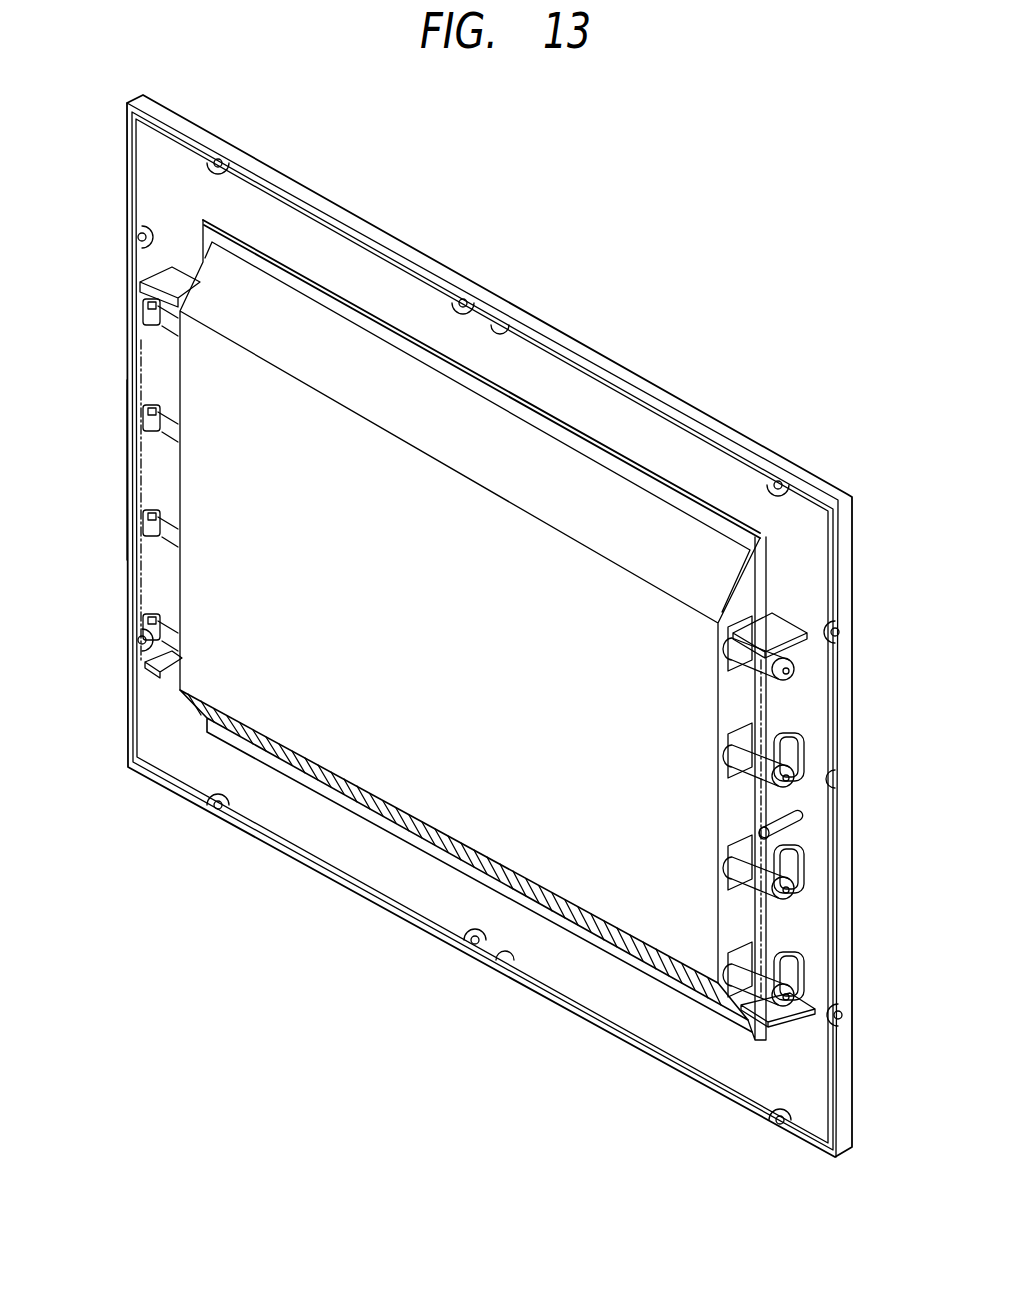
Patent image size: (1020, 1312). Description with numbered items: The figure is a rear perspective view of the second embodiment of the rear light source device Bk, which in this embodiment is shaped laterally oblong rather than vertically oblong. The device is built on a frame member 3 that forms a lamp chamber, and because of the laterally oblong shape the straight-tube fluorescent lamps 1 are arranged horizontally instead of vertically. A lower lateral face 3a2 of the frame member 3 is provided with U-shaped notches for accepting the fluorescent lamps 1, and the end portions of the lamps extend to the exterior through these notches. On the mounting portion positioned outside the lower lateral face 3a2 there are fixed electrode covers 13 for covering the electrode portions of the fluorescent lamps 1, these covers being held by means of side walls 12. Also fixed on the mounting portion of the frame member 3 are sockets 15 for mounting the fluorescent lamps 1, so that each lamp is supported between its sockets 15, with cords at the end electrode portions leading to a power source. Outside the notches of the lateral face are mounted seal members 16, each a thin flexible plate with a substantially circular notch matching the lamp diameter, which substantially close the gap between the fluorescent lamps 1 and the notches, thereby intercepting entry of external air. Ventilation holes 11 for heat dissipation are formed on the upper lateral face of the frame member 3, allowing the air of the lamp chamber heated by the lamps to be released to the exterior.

The frame member 3 is at (458, 262).
The lower lateral face 3a2 is at (740, 800).
The rear light source device Bk is at (120, 497).
The ventilation holes 11 is at (450, 836).
The fluorescent lamp 1 is at (168, 445).
The side wall 12 is at (160, 280).
The electrode cover 13 is at (140, 335).
The socket 15 is at (790, 660).
The seal member 16 is at (720, 622).